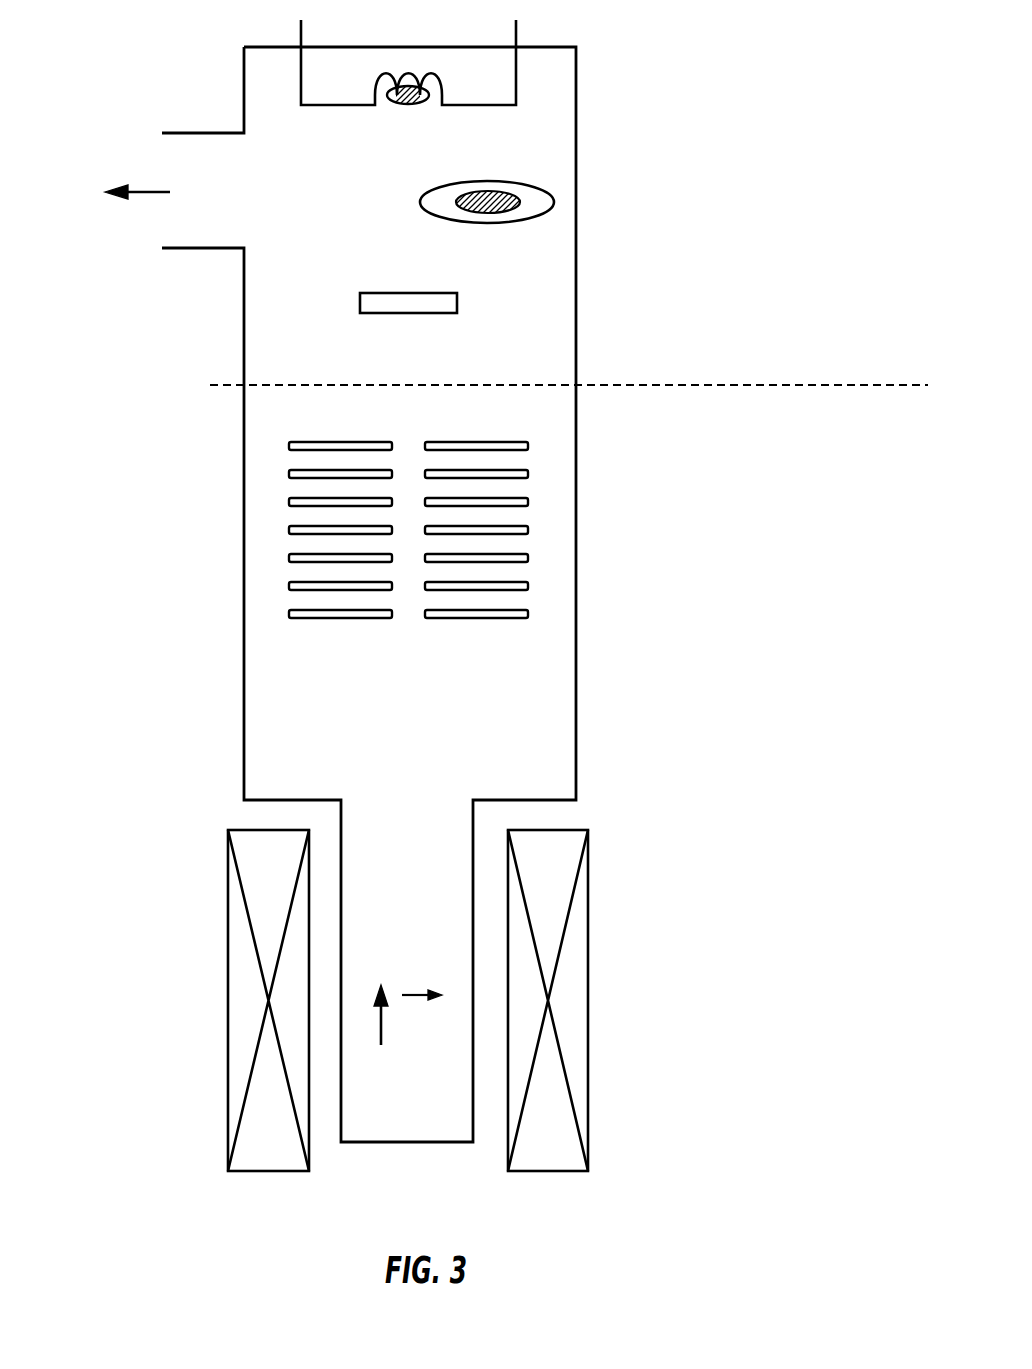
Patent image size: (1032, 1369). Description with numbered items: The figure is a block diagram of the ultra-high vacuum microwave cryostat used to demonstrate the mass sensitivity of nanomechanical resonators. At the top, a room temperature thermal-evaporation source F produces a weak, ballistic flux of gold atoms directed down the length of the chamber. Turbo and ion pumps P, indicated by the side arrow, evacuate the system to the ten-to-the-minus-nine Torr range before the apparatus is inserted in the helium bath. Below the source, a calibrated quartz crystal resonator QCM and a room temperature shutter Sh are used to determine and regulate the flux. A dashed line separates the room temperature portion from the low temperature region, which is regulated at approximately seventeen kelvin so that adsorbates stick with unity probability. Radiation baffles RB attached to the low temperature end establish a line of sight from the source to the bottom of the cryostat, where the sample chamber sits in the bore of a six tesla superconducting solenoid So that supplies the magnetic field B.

The thermal-evaporation source F is at (408, 52).
The turbo and ion pumps P is at (116, 193).
The quartz crystal resonator QCM is at (546, 205).
The shutter Sh is at (503, 308).
The radiation baffles RB is at (469, 530).
The superconducting solenoid So is at (437, 1000).
The magnetic field B is at (408, 1015).